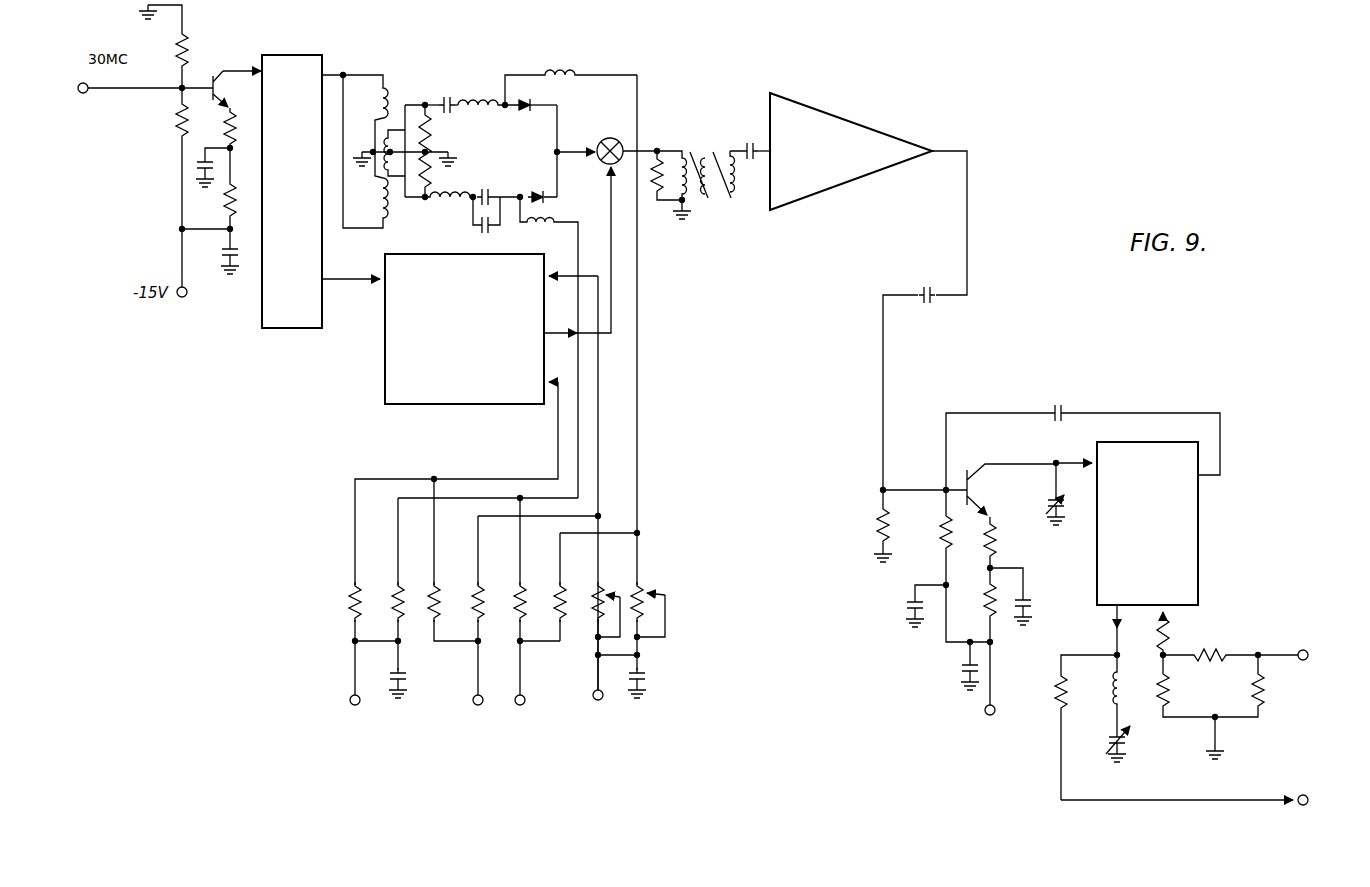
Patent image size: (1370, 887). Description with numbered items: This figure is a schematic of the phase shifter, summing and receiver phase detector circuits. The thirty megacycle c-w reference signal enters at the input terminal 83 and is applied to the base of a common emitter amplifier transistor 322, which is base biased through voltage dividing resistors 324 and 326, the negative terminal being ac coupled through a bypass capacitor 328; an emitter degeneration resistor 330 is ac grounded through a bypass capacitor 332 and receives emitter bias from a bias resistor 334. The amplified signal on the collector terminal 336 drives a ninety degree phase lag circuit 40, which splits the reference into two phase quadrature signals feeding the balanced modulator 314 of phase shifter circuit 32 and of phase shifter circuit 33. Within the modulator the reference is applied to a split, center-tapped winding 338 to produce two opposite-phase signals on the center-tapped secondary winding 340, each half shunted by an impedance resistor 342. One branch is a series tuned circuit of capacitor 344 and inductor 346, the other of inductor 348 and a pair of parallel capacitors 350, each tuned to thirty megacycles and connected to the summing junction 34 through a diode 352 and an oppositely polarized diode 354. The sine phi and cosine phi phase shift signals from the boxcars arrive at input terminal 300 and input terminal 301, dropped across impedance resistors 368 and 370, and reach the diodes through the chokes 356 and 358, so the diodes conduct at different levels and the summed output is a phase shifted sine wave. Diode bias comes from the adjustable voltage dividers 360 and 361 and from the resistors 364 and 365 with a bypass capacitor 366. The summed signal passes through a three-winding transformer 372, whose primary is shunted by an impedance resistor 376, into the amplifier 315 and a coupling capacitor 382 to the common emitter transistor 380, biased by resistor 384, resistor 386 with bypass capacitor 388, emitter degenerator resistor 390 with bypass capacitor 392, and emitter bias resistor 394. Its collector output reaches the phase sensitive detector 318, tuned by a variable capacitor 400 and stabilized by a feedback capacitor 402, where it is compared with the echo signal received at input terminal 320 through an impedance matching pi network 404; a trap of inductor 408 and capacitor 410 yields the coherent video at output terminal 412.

The input terminal 83 is at (84, 96).
The voltage dividing resistor 324 is at (192, 46).
The common emitter amplifier transistor 322 is at (219, 77).
The collector terminal 336 is at (253, 68).
The 90° phase lag circuit 40 is at (308, 62).
The voltage dividing resistor 326 is at (178, 122).
The emitter degeneration resistor 330 is at (226, 126).
The bypass capacitor 332 is at (197, 165).
The bias resistor 334 is at (226, 200).
The bypass capacitor 328 is at (222, 262).
The split, center-tapped winding 338 is at (390, 88).
The center-tapped secondary winding 340 is at (395, 140).
The capacitor 344 is at (450, 98).
The inductor 346 is at (480, 108).
The impedance resistor 342 is at (450, 153).
The diode 352 is at (526, 112).
The balanced modulator 314 is at (508, 181).
The diode 354 is at (539, 190).
The inductor 348 is at (446, 200).
The pair of parallel capacitors 350 is at (476, 214).
The choke 358 is at (556, 220).
The choke 356 is at (563, 70).
The phase shifter circuit 32 is at (494, 58).
The summing junction 34 is at (610, 137).
The three-winding transformer 372 is at (707, 146).
The impedance resistor 376 is at (658, 196).
The amplifier 315 is at (846, 121).
The capacitor 382 is at (928, 287).
The phase shifter circuit 33 is at (430, 409).
The resistor 365 is at (350, 600).
The resistor 364 is at (393, 598).
The bypass capacitor 366 is at (404, 680).
The impedance resistor 370 is at (440, 587).
The impedance resistor 368 is at (483, 590).
The adjustable voltage divider 361 is at (612, 588).
The adjustable voltage divider 360 is at (646, 585).
The input terminal 300 is at (521, 707).
The input terminal 301 is at (473, 706).
The resistor 384 is at (880, 517).
The resistor 386 is at (943, 532).
The bypass capacitor 388 is at (910, 608).
The common emitter transistor 380 is at (969, 470).
The emitter degenerator resistor 390 is at (995, 540).
The bypass capacitor 392 is at (1028, 600).
The emitter bias resistor 394 is at (986, 598).
The variable capacitor 400 is at (1052, 498).
The feedback capacitor 402 is at (1062, 406).
The phase sensitive detector 318 is at (1156, 440).
The impedance matching π network 404 is at (1210, 671).
The inductor 408 is at (1113, 700).
The capacitor 410 is at (1106, 750).
The input terminal 320 is at (1303, 648).
The output terminal 412 is at (1306, 795).